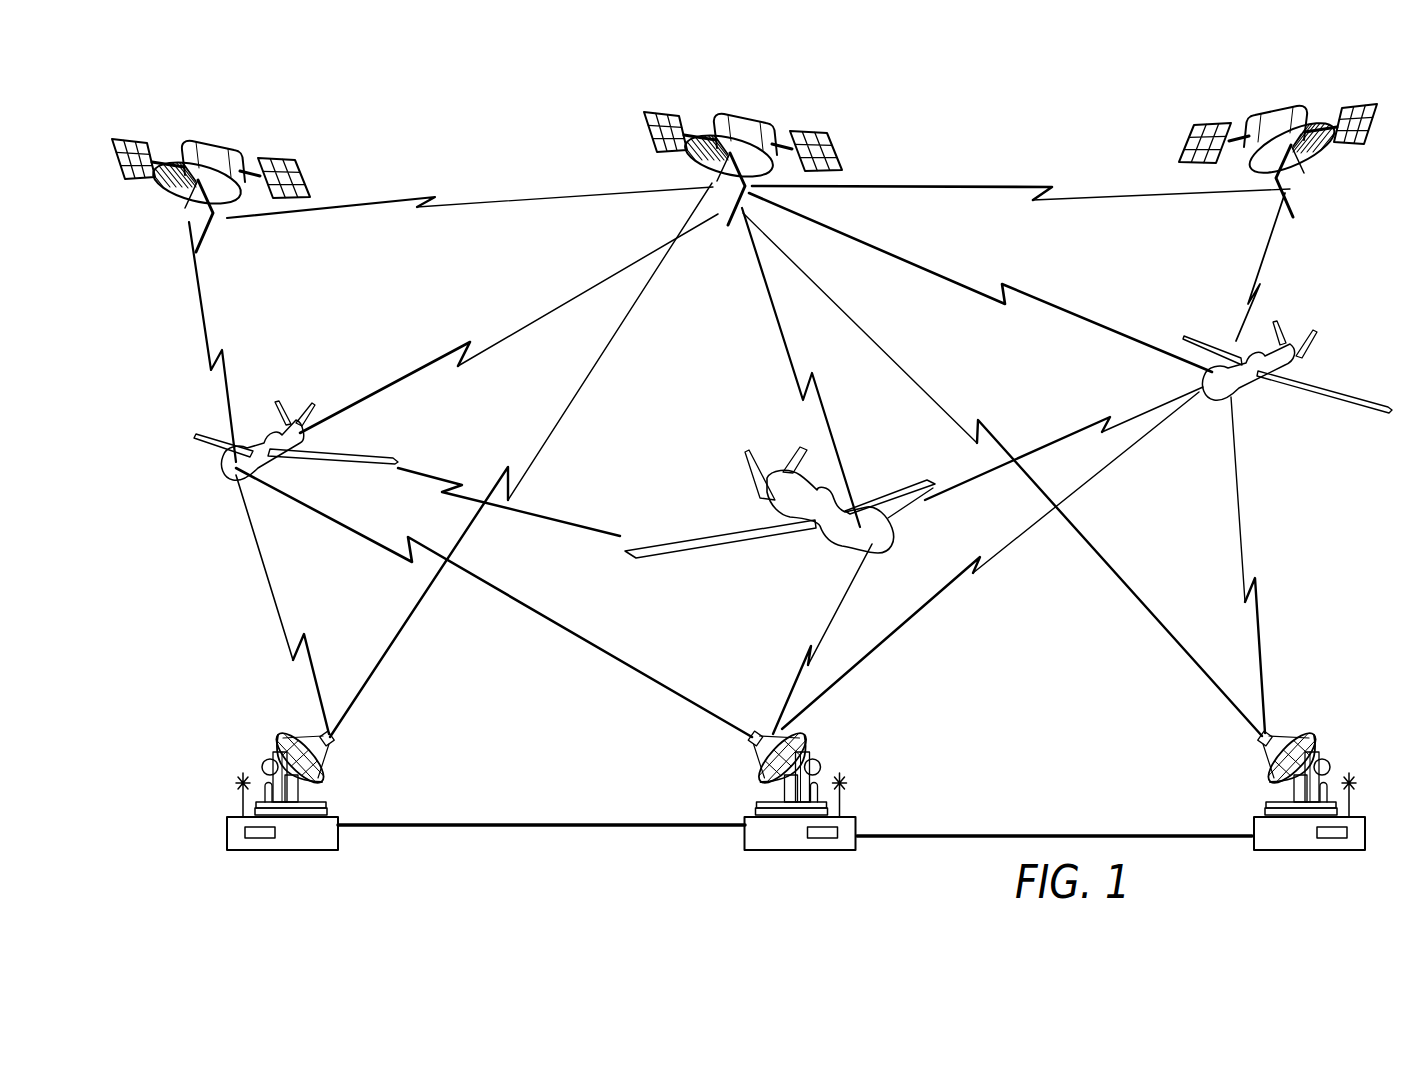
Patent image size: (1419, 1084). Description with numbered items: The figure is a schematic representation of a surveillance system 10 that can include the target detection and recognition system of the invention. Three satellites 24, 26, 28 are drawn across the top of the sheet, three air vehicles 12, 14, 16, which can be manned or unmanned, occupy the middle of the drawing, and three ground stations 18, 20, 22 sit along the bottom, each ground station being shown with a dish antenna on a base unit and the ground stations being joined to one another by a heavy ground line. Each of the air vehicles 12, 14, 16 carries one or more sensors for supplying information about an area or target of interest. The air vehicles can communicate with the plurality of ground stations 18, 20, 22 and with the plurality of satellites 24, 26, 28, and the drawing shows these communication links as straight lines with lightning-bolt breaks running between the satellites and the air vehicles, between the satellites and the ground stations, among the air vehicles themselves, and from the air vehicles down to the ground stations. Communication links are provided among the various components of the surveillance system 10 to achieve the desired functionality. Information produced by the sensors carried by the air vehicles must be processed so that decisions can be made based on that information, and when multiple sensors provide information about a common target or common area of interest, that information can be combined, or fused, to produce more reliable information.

The surveillance system 10 is at (692, 392).
The air vehicle 12 is at (330, 452).
The air vehicle 14 is at (762, 536).
The air vehicle 16 is at (1253, 385).
The ground station 18 is at (294, 851).
The ground station 20 is at (815, 851).
The ground station 22 is at (1288, 851).
The satellite 24 is at (217, 148).
The satellite 26 is at (748, 118).
The satellite 28 is at (1272, 108).